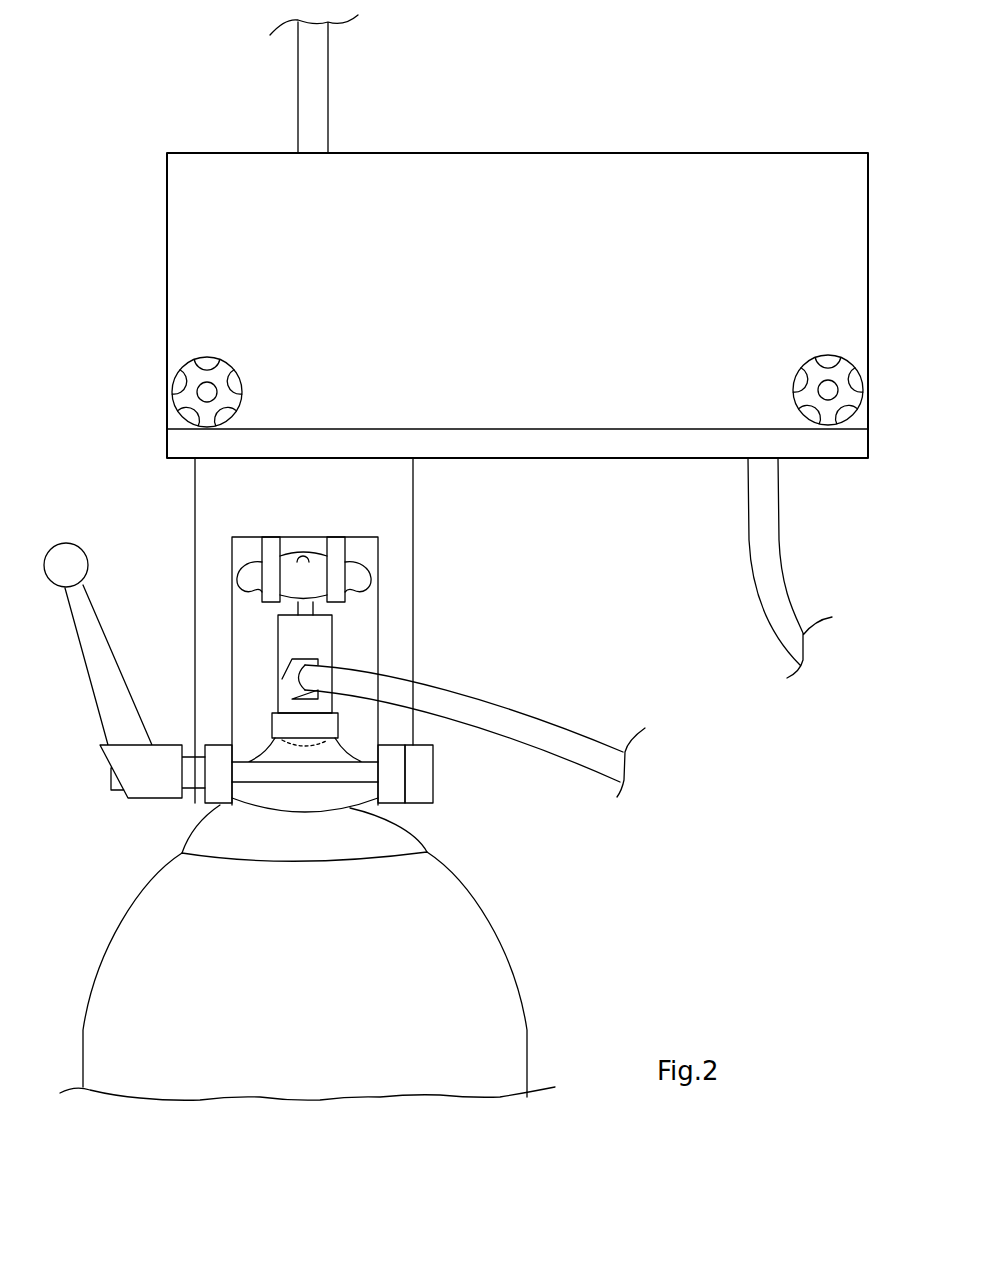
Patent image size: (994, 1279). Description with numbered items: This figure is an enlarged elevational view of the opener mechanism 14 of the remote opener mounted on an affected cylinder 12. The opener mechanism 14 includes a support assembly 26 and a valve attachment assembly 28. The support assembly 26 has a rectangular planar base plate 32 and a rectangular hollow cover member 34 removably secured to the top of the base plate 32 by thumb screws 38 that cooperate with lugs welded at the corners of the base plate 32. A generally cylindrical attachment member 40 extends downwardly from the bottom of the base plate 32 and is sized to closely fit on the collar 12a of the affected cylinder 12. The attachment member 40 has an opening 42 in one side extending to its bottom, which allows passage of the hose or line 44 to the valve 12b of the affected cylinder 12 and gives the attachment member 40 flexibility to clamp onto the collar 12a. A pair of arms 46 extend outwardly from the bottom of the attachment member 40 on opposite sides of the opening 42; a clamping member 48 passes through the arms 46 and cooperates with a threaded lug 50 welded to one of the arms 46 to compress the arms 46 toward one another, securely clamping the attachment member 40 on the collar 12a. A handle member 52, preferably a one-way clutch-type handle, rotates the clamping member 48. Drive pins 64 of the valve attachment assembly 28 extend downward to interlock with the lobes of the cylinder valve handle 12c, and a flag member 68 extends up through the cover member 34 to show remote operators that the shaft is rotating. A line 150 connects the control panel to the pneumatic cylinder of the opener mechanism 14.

The affected cylinder 12 is at (490, 917).
The collar 12a is at (427, 850).
The valve 12b is at (268, 636).
The valve handle 12c is at (245, 575).
The opener mechanism 14 is at (666, 145).
The support assembly 26 is at (602, 470).
The valve attachment assembly 28 is at (355, 548).
The base plate 32 is at (698, 460).
The cover member 34 is at (188, 282).
The thumb screws 38 is at (175, 388).
The attachment member 40 is at (195, 500).
The opening 42 is at (372, 636).
The hose or line 44 is at (508, 710).
The arms 46 is at (205, 808).
The clamping member 48 is at (297, 780).
The threaded lug 50 is at (433, 758).
The handle member 52 is at (90, 607).
The drive pins 64 is at (303, 571).
The flag member 68 is at (328, 84).
The hose or line 150 is at (778, 562).